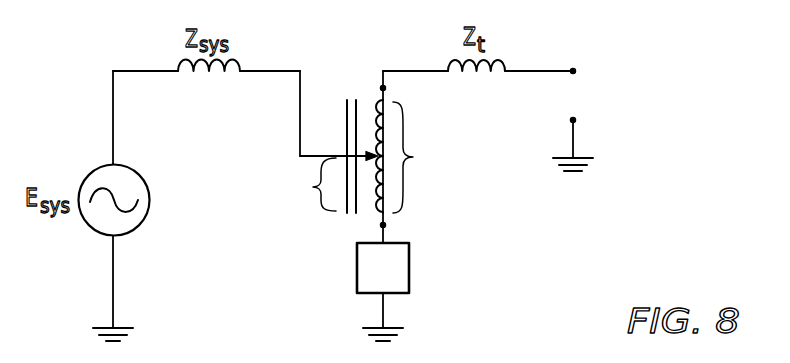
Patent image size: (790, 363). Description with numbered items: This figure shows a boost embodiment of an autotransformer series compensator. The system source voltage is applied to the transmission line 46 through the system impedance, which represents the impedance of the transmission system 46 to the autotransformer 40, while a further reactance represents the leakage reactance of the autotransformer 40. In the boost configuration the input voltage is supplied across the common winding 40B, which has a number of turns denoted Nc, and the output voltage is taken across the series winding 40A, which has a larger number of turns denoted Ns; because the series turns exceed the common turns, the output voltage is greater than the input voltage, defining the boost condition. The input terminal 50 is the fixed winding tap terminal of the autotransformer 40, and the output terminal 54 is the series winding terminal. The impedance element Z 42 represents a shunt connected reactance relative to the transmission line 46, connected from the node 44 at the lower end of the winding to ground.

The autotransformer 40 is at (361, 172).
The series winding 40A is at (413, 157).
The common winding 40B is at (313, 187).
The impedance element Z 42 is at (409, 268).
The node 44 is at (388, 226).
The transmission line 46 is at (257, 71).
The input terminal 50 is at (373, 152).
The output terminal 54 is at (383, 88).